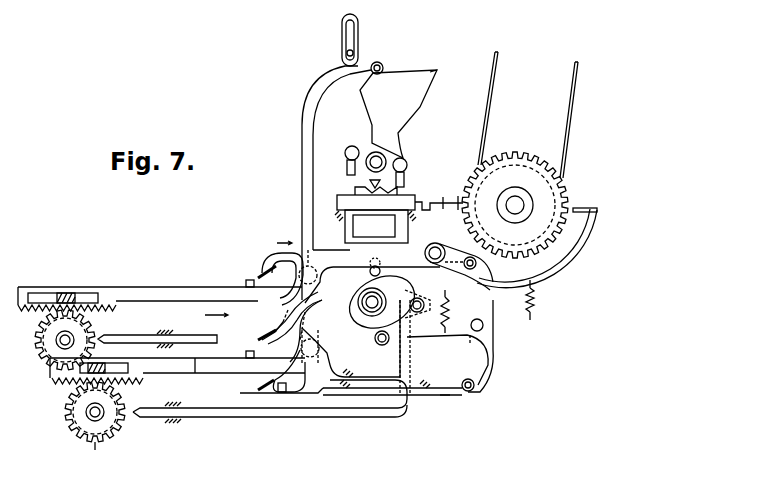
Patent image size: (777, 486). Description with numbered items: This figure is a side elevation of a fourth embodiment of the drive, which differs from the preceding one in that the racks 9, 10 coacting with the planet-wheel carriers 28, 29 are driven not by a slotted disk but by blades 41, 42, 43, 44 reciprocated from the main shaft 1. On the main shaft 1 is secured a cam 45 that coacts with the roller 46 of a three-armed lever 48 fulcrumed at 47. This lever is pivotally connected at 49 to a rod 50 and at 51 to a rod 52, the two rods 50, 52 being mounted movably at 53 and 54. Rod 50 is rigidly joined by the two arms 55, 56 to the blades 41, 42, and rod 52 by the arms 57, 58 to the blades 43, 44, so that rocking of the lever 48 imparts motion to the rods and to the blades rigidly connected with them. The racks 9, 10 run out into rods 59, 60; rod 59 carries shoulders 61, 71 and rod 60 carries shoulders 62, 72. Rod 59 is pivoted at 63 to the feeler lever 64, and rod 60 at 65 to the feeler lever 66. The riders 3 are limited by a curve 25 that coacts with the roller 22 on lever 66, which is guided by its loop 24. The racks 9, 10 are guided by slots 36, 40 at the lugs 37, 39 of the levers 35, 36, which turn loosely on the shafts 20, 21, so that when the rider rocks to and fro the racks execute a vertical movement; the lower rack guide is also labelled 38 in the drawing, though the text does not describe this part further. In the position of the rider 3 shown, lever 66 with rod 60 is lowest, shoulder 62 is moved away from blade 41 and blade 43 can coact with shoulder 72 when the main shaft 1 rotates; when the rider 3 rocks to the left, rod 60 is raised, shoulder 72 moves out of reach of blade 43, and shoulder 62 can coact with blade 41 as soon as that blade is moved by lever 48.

The main shaft 1 is at (372, 305).
The rider 3 is at (398, 114).
The rack 9 is at (138, 368).
The rack 10 is at (108, 296).
The shaft 20 is at (92, 416).
The shaft 21 is at (60, 345).
The roller 22 is at (380, 63).
The loop 24 is at (358, 32).
The curve 25 is at (437, 70).
The planet-wheel carrier 28 is at (100, 440).
The planet-wheel carrier 29 is at (42, 345).
The lever 35 is at (118, 400).
The lever 36 is at (40, 330).
The lug 37 is at (92, 393).
The lower rack 38 is at (66, 376).
The lug 39 is at (68, 293).
The slot 40 is at (40, 293).
The blade 41 is at (262, 272).
The blade 42 is at (260, 338).
The blade 43 is at (262, 318).
The blade 44 is at (264, 392).
The cam 45 is at (400, 310).
The roller 46 is at (389, 340).
The fulcrum 47 is at (483, 325).
The three-armed lever 48 is at (460, 337).
The pivot connection 49 is at (477, 267).
The rod 50 is at (426, 248).
The pivot connection 51 is at (475, 386).
The rod 52 is at (455, 397).
The mounting 53 is at (350, 240).
The mounting 54 is at (352, 396).
The arm 55 is at (296, 251).
The arm 56 is at (314, 296).
The arm 57 is at (320, 343).
The arm 58 is at (302, 396).
The rod 59 is at (200, 373).
The rod 60 is at (170, 287).
The shoulder 61 is at (249, 360).
The shoulder 62 is at (249, 280).
The pivot connection 63 is at (301, 349).
The feeler lever 64 is at (305, 315).
The pivot connection 65 is at (310, 245).
The feeler lever 66 is at (307, 150).
The shoulder 71 is at (283, 394).
The shoulder 72 is at (282, 279).